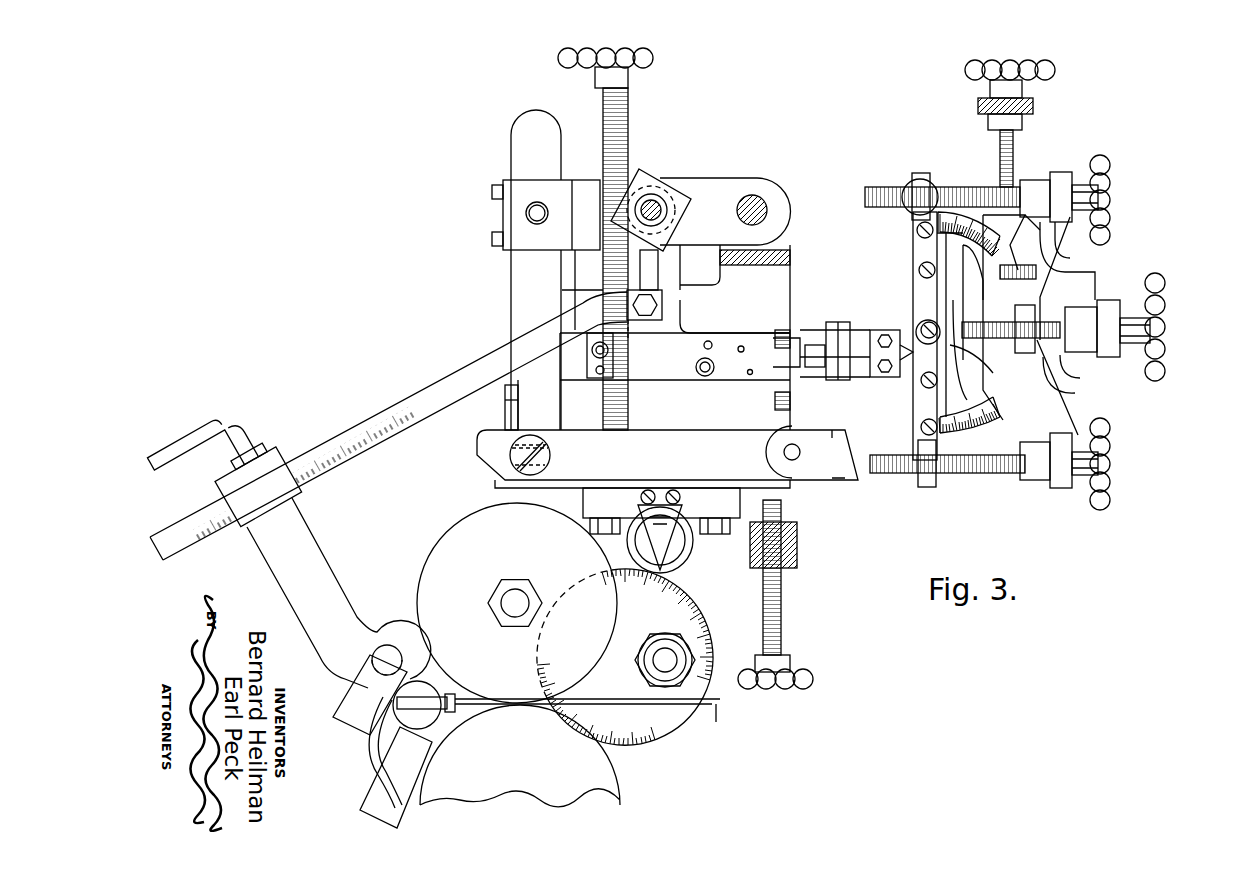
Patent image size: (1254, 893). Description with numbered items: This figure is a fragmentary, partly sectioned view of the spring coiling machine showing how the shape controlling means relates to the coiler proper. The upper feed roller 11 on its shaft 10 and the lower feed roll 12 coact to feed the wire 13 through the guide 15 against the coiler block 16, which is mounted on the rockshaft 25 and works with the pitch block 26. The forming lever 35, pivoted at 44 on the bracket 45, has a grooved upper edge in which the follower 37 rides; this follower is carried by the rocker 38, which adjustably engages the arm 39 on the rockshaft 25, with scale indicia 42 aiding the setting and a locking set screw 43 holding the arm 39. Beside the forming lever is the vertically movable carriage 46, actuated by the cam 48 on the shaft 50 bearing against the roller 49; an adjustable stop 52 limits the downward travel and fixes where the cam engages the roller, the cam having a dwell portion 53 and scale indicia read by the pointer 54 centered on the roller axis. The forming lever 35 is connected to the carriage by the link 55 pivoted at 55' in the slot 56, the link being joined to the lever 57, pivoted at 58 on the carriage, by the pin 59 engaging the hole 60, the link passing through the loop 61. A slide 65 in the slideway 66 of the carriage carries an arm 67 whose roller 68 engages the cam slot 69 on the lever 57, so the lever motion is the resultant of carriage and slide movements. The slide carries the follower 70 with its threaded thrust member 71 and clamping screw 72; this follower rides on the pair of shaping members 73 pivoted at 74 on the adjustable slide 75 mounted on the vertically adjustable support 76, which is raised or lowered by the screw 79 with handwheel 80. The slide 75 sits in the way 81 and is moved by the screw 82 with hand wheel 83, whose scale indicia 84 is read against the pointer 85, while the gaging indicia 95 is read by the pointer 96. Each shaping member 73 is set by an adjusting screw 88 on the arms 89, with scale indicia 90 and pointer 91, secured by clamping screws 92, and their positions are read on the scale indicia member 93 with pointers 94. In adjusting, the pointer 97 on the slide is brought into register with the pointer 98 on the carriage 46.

The shaft 10 is at (516, 590).
The upper feed roller 11 is at (452, 540).
The lower feed roll 12 is at (612, 780).
The wire 13 is at (716, 722).
The guide 15 is at (452, 713).
The coiler block 16 is at (348, 726).
The rockshaft 25 is at (388, 645).
The pitch block 26 is at (364, 800).
The forming lever 35 is at (695, 430).
The follower 37 is at (630, 402).
The rocker 38 is at (417, 384).
The arm 39 is at (314, 526).
The scale indicia 42 is at (355, 447).
The locking set screw 43 is at (240, 430).
The pivot 44 is at (784, 460).
The bracket 45 is at (810, 470).
The carriage 46 is at (790, 292).
The cam 48 is at (714, 609).
The roller 49 is at (694, 541).
The shaft 50 is at (668, 658).
The adjustable stop 52 is at (783, 583).
The dwell portion 53 is at (700, 666).
The pointer 54 is at (670, 545).
The link 55 is at (497, 407).
The pivot 55' is at (494, 435).
The slot 56 is at (515, 458).
The lever 57 is at (711, 178).
The pivot 58 is at (760, 196).
The pin 59 is at (548, 210).
The hole 60 is at (537, 205).
The loop 61 is at (505, 217).
The slide 65 is at (740, 350).
The slideway 66 is at (790, 402).
The arm 67 is at (665, 303).
The roller 68 is at (650, 194).
The cam slot 69 is at (674, 188).
The follower 70 is at (897, 377).
The threaded thrust member 71 is at (823, 335).
The clamping screw 72 is at (850, 330).
The shaping members 73 is at (915, 276).
The pivot 74 is at (917, 337).
The adjustable slide 75 is at (985, 365).
The vertically adjustable support 76 is at (1065, 280).
The screw 79 is at (1014, 162).
The handwheel 80 is at (1050, 70).
The way 81 is at (1050, 355).
The screw 82 is at (992, 326).
The hand wheel 83 is at (1166, 350).
The scale indicia 84 is at (1090, 335).
The pointer 85 is at (1110, 306).
The adjusting screw 88 is at (968, 187).
The arms 89 is at (1068, 243).
The scale indicia 90 is at (1032, 182).
The pointer 91 is at (1063, 190).
The clamping screws 92 is at (926, 175).
The scale indicia member 93 is at (937, 222).
The pointers 94 is at (960, 268).
The gaging indicia 95 is at (1042, 264).
The pointer 96 is at (1040, 244).
The pointer 97 is at (742, 372).
The pointer 98 is at (750, 374).